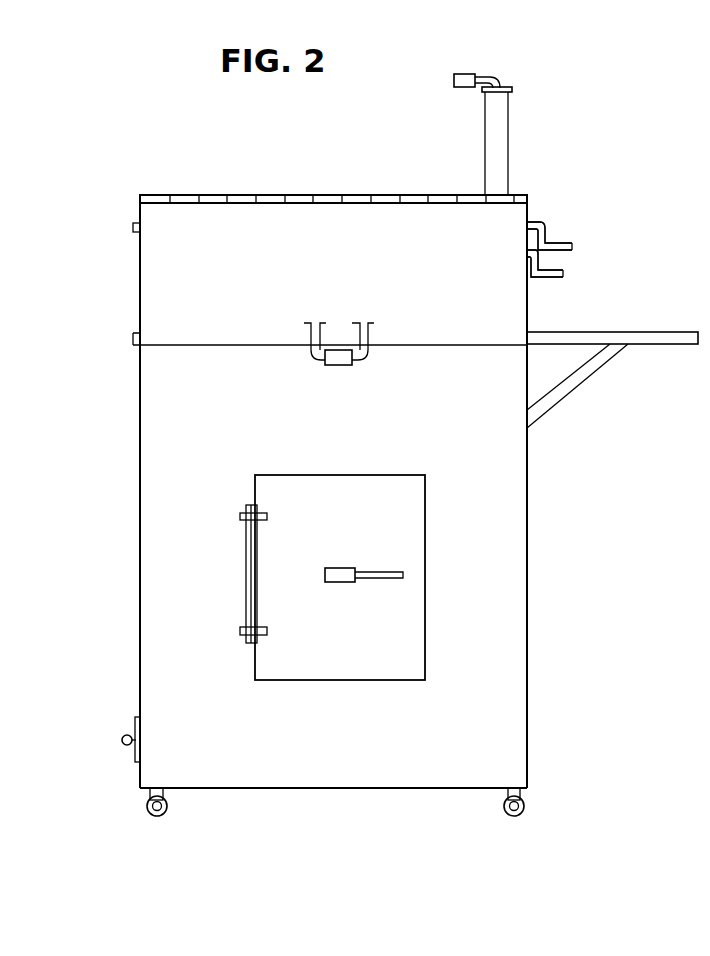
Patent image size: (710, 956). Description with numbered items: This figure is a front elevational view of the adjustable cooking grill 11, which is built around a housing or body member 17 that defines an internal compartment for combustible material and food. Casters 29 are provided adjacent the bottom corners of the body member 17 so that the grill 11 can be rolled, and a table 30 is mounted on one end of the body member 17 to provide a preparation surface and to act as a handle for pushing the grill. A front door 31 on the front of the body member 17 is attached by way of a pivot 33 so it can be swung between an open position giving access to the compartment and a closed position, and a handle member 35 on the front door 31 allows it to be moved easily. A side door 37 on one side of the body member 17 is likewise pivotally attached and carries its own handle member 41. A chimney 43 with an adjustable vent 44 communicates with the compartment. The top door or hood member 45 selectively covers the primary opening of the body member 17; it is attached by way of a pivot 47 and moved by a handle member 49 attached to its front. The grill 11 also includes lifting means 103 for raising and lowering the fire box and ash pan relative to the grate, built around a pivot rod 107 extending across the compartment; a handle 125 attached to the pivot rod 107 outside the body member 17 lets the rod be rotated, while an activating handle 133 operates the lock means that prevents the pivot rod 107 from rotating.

The grill 11 is at (553, 94).
The body member 17 is at (134, 480).
The casters 29 is at (152, 815).
The table 30 is at (662, 333).
The front door 31 is at (412, 630).
The pivot 33 is at (237, 568).
The handle member 35 is at (342, 569).
The side door 37 is at (135, 760).
The handle member 41 is at (122, 737).
The chimney 43 is at (491, 143).
The adjustable vent 44 is at (487, 93).
The hood member 45 is at (131, 262).
The pivot 47 is at (325, 196).
The handle member 49 is at (335, 365).
The lifting means 103 is at (571, 219).
The pivot rod 107 is at (133, 227).
The handle 125 is at (573, 247).
The activating handle 133 is at (556, 279).